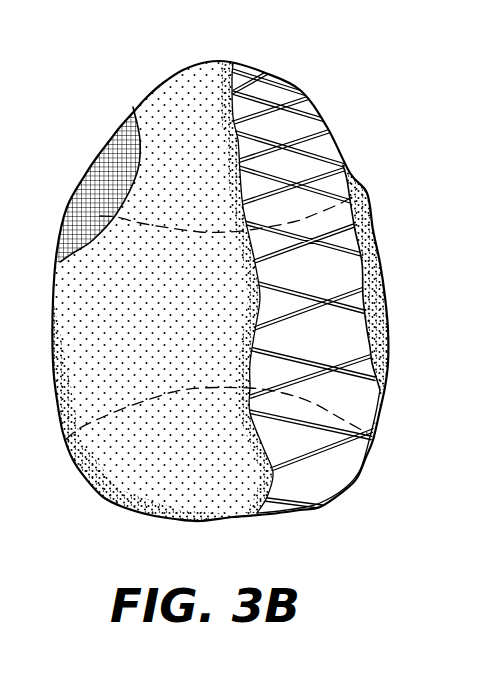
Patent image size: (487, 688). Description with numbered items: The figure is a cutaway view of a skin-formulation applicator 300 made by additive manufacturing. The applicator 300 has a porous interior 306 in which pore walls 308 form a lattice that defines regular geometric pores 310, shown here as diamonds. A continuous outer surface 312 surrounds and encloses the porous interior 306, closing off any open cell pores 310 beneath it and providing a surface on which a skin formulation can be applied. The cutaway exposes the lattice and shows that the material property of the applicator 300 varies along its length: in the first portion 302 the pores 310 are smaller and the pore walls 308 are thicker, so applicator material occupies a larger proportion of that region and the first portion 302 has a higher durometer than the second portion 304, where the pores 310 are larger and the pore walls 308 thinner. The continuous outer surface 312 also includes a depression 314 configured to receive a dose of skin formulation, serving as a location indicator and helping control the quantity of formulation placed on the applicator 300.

The skin-formulation applicator 300 is at (80, 101).
The first portion 302 is at (342, 186).
The second portion 304 is at (340, 464).
The porous interior 306 is at (398, 300).
The pore walls 308 is at (287, 107).
The pores 310 is at (318, 268).
The continuous surface 312 is at (197, 112).
The depression 314 is at (106, 191).